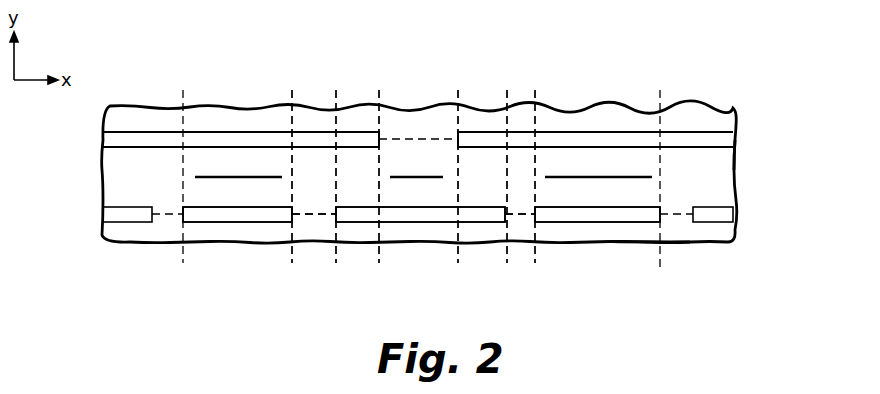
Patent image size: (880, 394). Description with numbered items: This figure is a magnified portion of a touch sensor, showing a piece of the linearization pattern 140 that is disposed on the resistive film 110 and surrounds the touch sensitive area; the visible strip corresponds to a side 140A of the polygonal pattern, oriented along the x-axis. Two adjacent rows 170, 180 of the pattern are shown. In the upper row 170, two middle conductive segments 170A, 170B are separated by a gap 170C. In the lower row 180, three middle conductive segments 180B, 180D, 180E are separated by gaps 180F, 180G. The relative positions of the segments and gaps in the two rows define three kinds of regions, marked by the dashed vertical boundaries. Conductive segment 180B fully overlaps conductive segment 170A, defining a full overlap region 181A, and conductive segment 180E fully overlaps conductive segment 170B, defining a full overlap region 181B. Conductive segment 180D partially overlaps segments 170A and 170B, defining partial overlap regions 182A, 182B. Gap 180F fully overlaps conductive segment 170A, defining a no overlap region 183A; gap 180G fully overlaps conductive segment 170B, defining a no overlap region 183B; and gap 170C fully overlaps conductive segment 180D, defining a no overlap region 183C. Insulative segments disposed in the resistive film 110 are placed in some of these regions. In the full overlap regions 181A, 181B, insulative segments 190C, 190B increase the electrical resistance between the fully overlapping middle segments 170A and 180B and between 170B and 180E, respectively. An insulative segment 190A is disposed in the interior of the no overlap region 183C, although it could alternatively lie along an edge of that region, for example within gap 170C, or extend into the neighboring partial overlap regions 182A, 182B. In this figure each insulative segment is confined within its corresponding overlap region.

The resistive film 110 is at (682, 232).
The linearization pattern 140 is at (735, 195).
The side of linearization pattern 140A is at (727, 165).
The row 170 is at (110, 137).
The middle conductive segment 170A is at (148, 137).
The middle conductive segment 170B is at (712, 132).
The gap 170C is at (443, 128).
The row 180 is at (110, 215).
The middle conductive segment 180B is at (210, 215).
The middle conductive segment 180D is at (412, 218).
The middle conductive segment 180E is at (560, 215).
The gap 180F is at (315, 220).
The gap 180G is at (522, 222).
The full overlap region 181A is at (268, 195).
The full overlap region 181B is at (617, 200).
The partial overlap region 182A is at (358, 182).
The partial overlap region 182B is at (485, 180).
The no overlap region 183A is at (312, 167).
The no overlap region 183B is at (515, 180).
The no overlap region 183C is at (390, 157).
The insulative segment 190A is at (423, 177).
The insulative segment 190B is at (598, 177).
The insulative segment 190C is at (227, 177).